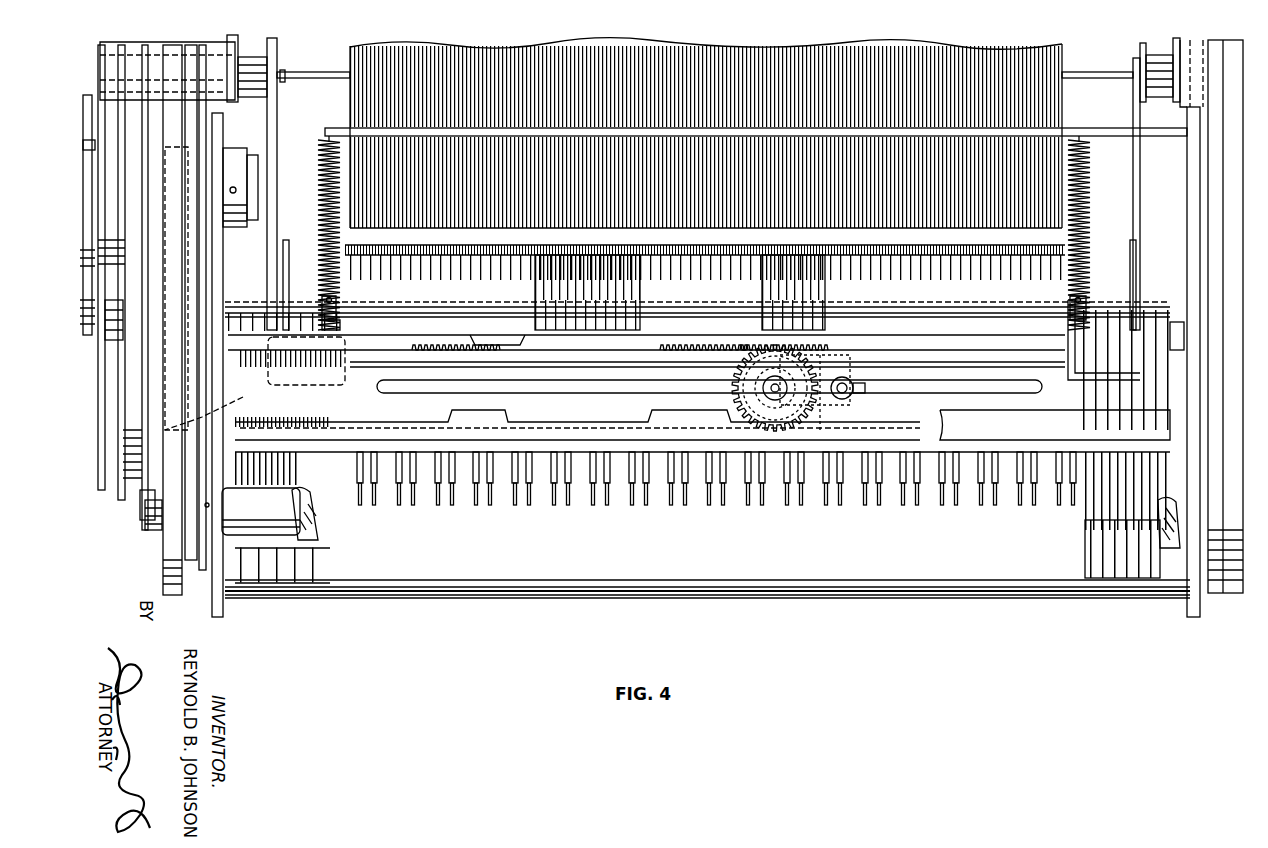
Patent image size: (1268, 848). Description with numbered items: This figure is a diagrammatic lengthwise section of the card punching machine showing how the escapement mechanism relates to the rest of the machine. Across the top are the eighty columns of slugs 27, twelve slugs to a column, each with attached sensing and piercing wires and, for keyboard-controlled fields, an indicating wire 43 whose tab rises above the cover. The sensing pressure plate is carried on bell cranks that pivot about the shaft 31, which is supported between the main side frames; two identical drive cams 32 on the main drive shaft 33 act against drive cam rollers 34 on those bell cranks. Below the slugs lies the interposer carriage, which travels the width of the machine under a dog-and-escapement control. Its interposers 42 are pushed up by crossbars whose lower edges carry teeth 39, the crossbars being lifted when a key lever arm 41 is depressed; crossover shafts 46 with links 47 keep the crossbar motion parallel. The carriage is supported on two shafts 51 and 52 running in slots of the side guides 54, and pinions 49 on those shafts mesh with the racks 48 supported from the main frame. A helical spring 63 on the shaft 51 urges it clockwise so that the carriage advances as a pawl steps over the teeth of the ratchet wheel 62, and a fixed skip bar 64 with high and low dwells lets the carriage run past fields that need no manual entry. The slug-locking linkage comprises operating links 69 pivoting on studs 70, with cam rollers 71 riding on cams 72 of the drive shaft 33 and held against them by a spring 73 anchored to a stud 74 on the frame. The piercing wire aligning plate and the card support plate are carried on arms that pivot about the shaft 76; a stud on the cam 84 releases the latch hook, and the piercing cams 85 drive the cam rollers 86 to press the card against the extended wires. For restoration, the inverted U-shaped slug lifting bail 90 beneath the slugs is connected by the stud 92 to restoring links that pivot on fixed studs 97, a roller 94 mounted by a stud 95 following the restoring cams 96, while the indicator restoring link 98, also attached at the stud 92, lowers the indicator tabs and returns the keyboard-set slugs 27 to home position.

The slugs 27 is at (462, 268).
The shaft 31 is at (260, 525).
The drive cams 32 is at (140, 441).
The main drive shaft 33 is at (258, 168).
The drive cam rollers 34 is at (139, 500).
The teeth 39 is at (476, 480).
The key lever arm 41 is at (555, 505).
The interposers 42 is at (820, 405).
The indicating wire 43 is at (610, 262).
The crossover shafts 46 is at (262, 300).
The links 47 is at (340, 325).
The racks 48 is at (432, 338).
The pinion gears 49 is at (768, 432).
The support shaft 51 is at (858, 388).
The support shaft 52 is at (745, 350).
The side guides 54 is at (395, 424).
The ratchet wheel 62 is at (795, 432).
The helical spring 63 is at (785, 432).
The skip bar 64 is at (650, 455).
The operating links 69 is at (338, 300).
The studs 70 is at (289, 285).
The cam rollers 71 is at (112, 342).
The cams 72 is at (88, 336).
The spring 73 is at (318, 170).
The stud 74 is at (320, 132).
The shaft 76 is at (305, 515).
The cam 84 is at (215, 408).
The piercing cams 85 is at (150, 418).
The cam rollers 86 is at (160, 506).
The slug lifting bail 90 is at (335, 385).
The stud 92 is at (284, 74).
The roller 94 is at (92, 57).
The stud 95 is at (93, 92).
The restoring cams 96 is at (93, 145).
The fixed studs 97 is at (345, 79).
The indicator restoring link 98 is at (240, 50).